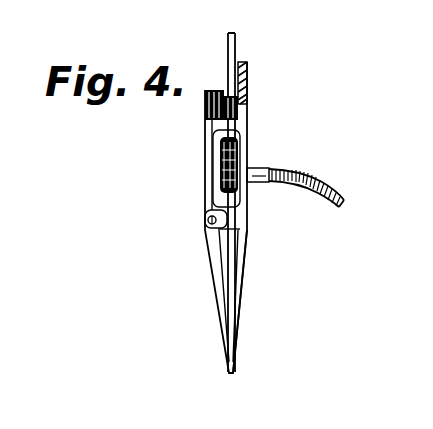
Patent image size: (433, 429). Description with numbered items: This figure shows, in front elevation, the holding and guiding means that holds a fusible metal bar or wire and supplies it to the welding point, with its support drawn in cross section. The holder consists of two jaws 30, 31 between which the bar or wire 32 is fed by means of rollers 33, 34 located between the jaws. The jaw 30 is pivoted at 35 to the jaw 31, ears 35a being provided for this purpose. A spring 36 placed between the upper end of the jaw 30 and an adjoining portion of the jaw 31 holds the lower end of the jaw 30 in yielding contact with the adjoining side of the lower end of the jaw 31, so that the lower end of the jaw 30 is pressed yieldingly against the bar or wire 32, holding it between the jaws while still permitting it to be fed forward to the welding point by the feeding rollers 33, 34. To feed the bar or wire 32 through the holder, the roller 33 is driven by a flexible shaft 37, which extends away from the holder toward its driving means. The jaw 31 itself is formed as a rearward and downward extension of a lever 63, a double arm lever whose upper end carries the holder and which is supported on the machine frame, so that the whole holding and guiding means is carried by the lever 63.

The jaw 30 is at (221, 315).
The jaw 31 is at (240, 300).
The bar or wire 32 is at (236, 36).
The roller 33 is at (214, 150).
The roller 34 is at (240, 160).
The pivot 35 is at (209, 222).
The ears 35a is at (220, 228).
The spring 36 is at (218, 88).
The flexible shaft 37 is at (278, 172).
The lever 63 is at (249, 78).